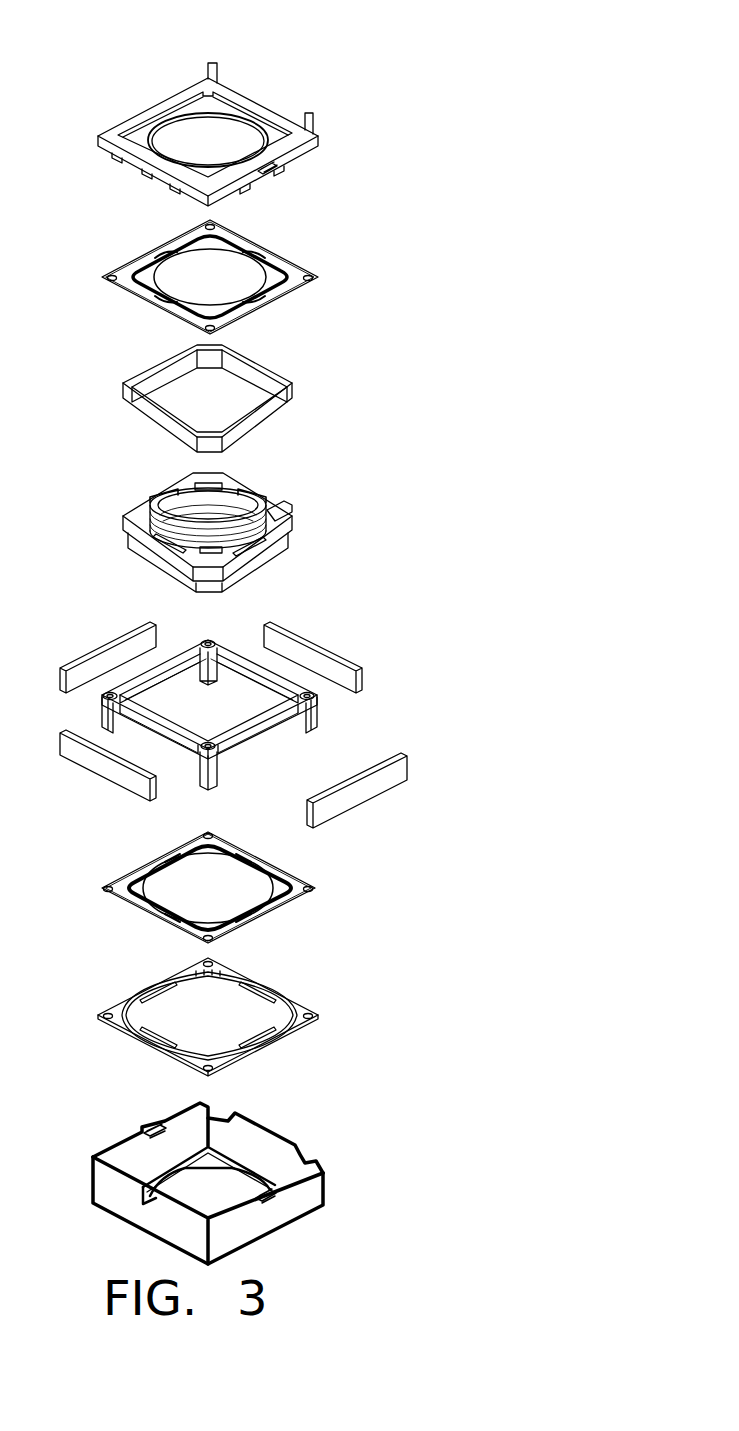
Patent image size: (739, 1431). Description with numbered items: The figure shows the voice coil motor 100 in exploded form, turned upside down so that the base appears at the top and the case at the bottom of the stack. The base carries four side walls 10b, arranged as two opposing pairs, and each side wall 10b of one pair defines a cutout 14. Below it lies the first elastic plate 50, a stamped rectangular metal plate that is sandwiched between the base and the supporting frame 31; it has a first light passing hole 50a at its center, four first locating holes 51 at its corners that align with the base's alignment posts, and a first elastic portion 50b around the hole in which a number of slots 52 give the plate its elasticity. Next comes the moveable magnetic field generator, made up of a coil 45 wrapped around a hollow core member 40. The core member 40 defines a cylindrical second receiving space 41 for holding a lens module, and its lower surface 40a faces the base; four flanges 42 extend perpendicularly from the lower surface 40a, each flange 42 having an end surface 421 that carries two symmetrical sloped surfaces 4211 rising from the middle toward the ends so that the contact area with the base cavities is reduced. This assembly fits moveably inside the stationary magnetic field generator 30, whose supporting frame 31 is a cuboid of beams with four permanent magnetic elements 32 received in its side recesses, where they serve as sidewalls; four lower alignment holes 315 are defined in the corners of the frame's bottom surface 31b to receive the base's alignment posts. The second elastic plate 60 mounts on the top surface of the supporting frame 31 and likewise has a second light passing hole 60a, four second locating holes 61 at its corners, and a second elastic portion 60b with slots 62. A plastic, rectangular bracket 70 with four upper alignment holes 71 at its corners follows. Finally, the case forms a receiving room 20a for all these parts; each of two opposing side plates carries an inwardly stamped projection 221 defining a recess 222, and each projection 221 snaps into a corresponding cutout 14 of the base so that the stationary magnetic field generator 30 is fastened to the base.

The voice coil motor 100 is at (238, 45).
The side wall 10b is at (302, 152).
The cutout 14 is at (262, 170).
The first elastic plate 50 is at (212, 279).
The first light passing hole 50a is at (178, 263).
The first elastic portion 50b is at (127, 265).
The first locating hole 51 is at (311, 285).
The slot 52 is at (302, 288).
The coil 45 is at (295, 435).
The core member 40 is at (222, 523).
The lower surface 40a is at (287, 520).
The second receiving space 41 is at (244, 492).
The flange 42 is at (148, 562).
The end surface 421 is at (166, 492).
The sloped surface 4211 is at (177, 487).
The stationary magnetic field generator 30 is at (249, 709).
The supporting frame 31 is at (323, 710).
The lower alignment hole 315 is at (209, 636).
The bottom surface 31b is at (258, 727).
The permanent magnetic element 32 is at (346, 653).
The second elastic plate 60 is at (201, 887).
The second light passing hole 60a is at (173, 875).
The second elastic portion 60b is at (123, 900).
The second locating hole 61 is at (313, 892).
The slot 62 is at (291, 896).
The bracket 70 is at (250, 1017).
The upper alignment hole 71 is at (315, 1023).
The receiving room 20a is at (218, 1179).
The projection 221 is at (157, 1128).
The recess 222 is at (264, 1194).